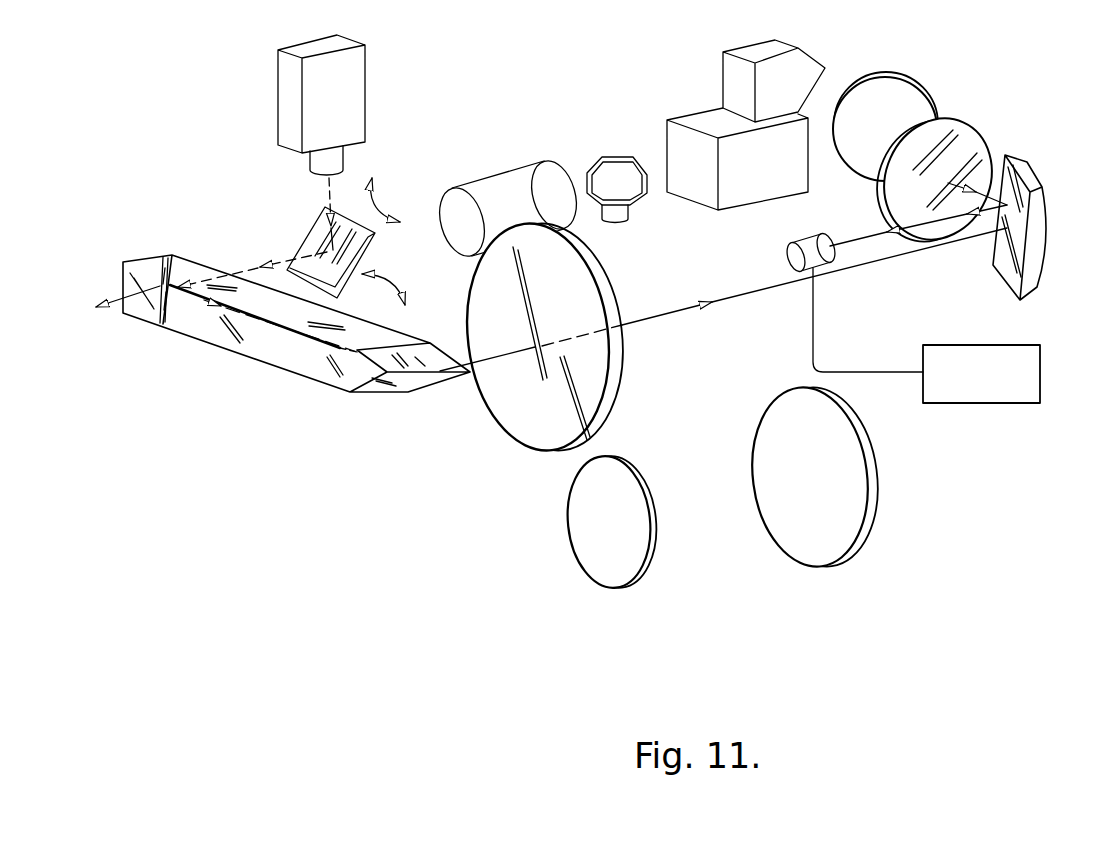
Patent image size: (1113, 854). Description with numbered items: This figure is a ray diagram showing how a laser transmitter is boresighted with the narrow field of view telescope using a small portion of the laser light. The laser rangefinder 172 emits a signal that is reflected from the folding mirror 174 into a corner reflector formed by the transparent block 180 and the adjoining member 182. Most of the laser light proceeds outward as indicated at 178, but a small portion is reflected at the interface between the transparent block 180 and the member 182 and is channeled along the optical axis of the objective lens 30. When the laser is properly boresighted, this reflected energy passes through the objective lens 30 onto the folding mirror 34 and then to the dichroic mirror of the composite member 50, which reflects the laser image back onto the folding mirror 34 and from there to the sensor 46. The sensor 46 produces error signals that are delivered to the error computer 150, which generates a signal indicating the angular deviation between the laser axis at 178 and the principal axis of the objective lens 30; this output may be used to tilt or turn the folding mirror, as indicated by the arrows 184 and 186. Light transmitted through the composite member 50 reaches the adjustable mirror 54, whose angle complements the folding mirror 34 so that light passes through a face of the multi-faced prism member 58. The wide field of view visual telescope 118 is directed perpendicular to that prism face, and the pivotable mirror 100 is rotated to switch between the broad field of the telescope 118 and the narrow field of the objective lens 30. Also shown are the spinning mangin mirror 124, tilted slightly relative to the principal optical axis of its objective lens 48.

The objective lens 30 is at (603, 284).
The folding mirror 34 is at (1048, 220).
The sensor 46 is at (802, 241).
The objective lens 48 is at (655, 527).
The composite member 50 is at (967, 128).
The adjustable mirror 54 is at (921, 94).
The multi-faced prism member 58 is at (741, 208).
The mirror 100 is at (612, 157).
The wide field of view visual telescope 118 is at (497, 180).
The spinning mangin mirror 124 is at (875, 525).
The error computer 150 is at (1033, 404).
The laser rangefinder 172 is at (356, 72).
The folding mirror 174 is at (276, 252).
The outgoing laser light 178 is at (104, 298).
The transparent block 180 is at (169, 254).
The member 182 is at (185, 268).
The arrows 184 is at (387, 280).
The arrows 186 is at (374, 202).